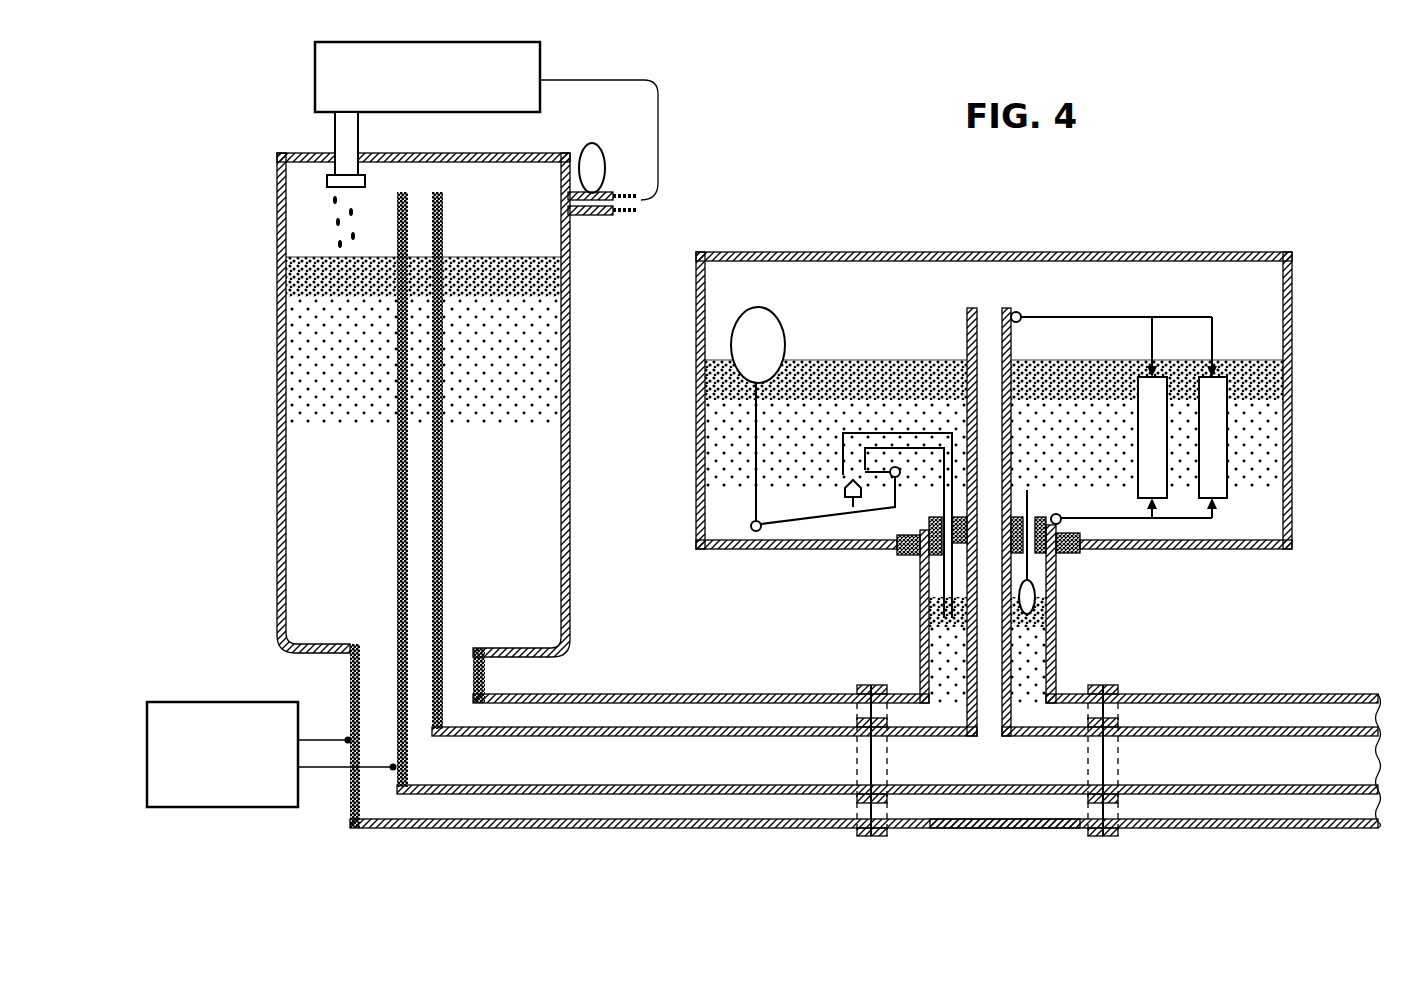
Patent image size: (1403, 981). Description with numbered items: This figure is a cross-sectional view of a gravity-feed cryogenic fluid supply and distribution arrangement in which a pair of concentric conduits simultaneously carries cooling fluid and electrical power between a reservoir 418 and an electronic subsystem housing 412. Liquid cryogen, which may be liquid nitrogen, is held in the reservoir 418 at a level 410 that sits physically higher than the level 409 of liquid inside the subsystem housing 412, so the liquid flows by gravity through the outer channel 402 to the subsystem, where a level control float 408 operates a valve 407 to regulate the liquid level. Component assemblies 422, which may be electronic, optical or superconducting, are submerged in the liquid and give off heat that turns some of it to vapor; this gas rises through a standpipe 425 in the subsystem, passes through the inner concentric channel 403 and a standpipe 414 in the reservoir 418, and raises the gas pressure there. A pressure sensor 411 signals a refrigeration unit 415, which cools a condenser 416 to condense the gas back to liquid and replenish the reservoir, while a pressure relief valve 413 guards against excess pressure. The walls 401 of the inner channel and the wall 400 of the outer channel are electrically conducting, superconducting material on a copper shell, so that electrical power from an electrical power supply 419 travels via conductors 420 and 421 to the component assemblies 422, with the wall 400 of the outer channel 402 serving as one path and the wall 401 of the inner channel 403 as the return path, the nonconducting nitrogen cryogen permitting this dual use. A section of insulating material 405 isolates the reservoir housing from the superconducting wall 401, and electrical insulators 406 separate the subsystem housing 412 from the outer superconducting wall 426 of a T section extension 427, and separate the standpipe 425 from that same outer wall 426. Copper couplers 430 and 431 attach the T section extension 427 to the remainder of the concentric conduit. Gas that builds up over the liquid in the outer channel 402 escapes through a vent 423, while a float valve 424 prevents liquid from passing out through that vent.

The wall of the outer channel 400 is at (660, 695).
The walls of the inner channel 401 is at (735, 728).
The outer channel 402 is at (567, 712).
The inner concentric channel 403 is at (575, 770).
The section of insulating material 405 is at (348, 677).
The electrical insulators 406 is at (930, 558).
The valve 407 is at (850, 519).
The level control float 408 is at (730, 322).
The level 409 is at (730, 360).
The level 410 is at (530, 258).
The pressure sensor 411 is at (638, 205).
The subsystem housing 412 is at (905, 252).
The pressure relief valve 413 is at (595, 142).
The standpipe 414 is at (443, 212).
The refrigeration unit 415 is at (533, 42).
The condenser 416 is at (327, 183).
The reservoir 418 is at (277, 313).
The electrical power supply 419 is at (200, 702).
The conductor 420 is at (348, 769).
The conductor 421 is at (1112, 317).
The component assemblies 422 is at (1220, 422).
The vent 423 is at (1035, 562).
The float valve 424 is at (1037, 590).
The standpipe 425 is at (967, 325).
The outer superconducting wall 426 is at (1057, 630).
The T section extension 427 is at (976, 829).
The copper coupler 430 is at (860, 834).
The copper coupler 431 is at (855, 797).